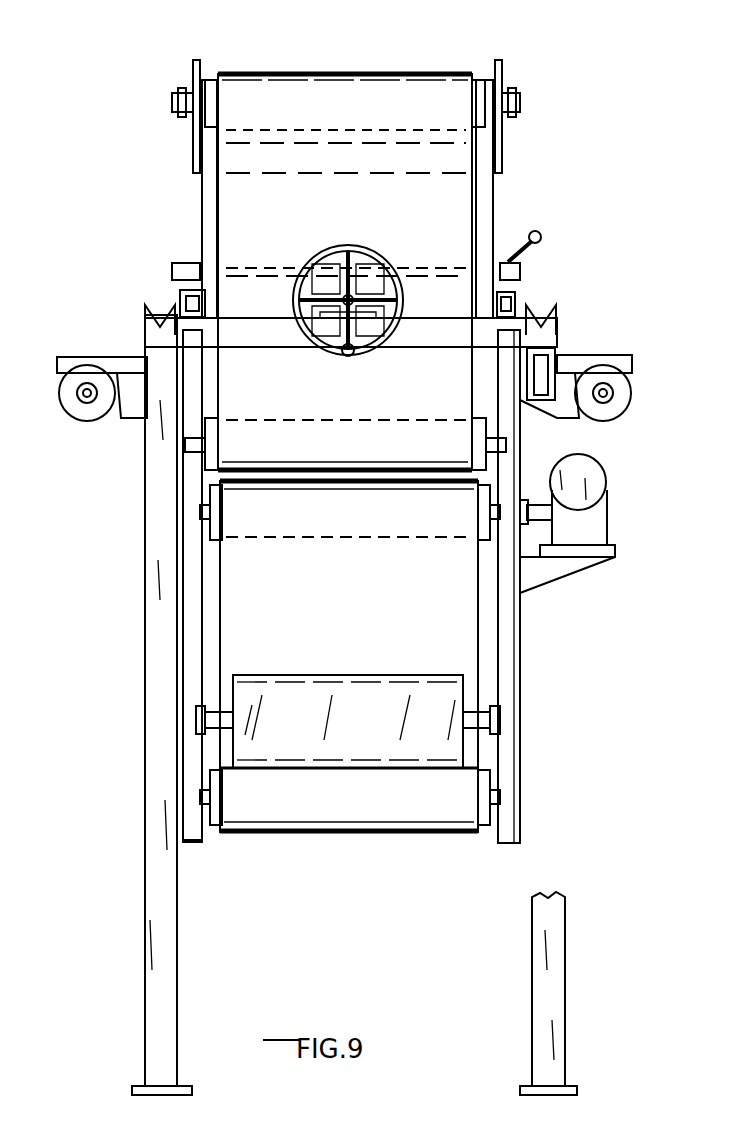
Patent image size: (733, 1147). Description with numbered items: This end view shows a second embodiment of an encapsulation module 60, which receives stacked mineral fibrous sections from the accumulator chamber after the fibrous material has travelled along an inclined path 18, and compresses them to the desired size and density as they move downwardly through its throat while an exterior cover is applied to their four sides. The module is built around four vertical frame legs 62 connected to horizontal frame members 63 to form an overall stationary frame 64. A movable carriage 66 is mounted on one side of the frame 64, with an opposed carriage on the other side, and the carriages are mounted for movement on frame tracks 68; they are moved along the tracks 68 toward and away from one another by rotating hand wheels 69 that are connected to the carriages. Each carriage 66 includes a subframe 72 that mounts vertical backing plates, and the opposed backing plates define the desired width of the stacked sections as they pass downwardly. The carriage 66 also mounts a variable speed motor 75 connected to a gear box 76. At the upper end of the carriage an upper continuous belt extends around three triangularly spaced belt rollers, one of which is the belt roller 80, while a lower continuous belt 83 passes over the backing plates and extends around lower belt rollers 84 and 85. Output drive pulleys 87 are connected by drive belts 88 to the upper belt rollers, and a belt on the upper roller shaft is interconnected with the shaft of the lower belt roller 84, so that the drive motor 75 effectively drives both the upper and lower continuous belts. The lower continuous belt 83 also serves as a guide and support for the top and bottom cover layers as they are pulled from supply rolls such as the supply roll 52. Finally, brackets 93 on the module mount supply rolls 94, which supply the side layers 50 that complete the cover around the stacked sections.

The inclined path 18 is at (358, 215).
The belt roller 80 is at (215, 75).
The hand wheel 69 is at (372, 262).
The horizontal frame member 63 is at (147, 365).
The frame track 68 is at (145, 315).
The lower belt roller 84 is at (475, 420).
The lower continuous belt 83 is at (364, 619).
The supply roll 52 is at (407, 770).
The lower belt roller 85 is at (500, 826).
The stationary frame 64 is at (147, 519).
The movable carriage 66 is at (522, 652).
The subframe 72 is at (197, 843).
The encapsulation module 60 is at (147, 714).
The vertical frame leg 62 is at (145, 935).
The bracket 93 is at (80, 357).
The supply roll 94 is at (73, 420).
The side layer 50 is at (121, 420).
The variable speed motor 75 is at (607, 482).
The gear box 76 is at (607, 535).
The output drive pulley 87 is at (548, 525).
The drive belt 88 is at (527, 480).